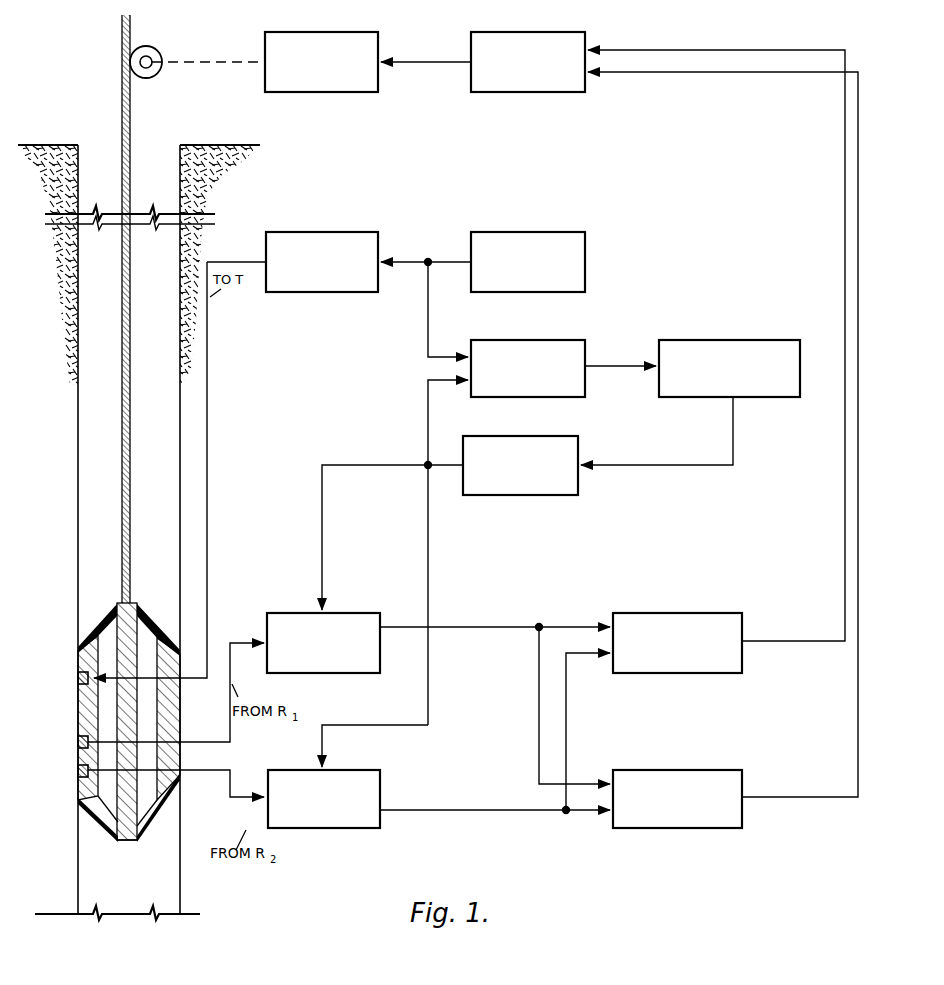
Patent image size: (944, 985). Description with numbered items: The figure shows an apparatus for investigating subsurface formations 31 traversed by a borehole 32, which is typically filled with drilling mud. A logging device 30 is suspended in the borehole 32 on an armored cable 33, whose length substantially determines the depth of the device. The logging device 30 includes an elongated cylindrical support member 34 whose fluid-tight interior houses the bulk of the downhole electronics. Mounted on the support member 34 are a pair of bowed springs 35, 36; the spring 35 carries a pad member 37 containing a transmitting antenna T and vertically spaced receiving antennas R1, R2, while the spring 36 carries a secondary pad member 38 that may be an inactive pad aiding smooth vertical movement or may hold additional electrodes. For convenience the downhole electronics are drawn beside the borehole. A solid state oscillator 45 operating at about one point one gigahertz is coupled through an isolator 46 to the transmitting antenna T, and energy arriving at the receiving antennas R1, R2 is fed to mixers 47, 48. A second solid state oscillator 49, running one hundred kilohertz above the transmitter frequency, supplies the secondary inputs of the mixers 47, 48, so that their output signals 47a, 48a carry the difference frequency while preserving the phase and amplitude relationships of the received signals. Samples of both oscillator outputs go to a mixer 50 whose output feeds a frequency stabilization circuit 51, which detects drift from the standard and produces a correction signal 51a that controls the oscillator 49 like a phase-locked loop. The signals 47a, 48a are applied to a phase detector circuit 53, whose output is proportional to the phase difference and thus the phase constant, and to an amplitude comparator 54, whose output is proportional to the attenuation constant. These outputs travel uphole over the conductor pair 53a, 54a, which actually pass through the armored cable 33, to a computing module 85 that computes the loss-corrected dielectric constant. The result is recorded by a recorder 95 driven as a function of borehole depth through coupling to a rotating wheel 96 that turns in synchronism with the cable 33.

The logging device 30 is at (113, 702).
The subsurface formations 31 is at (48, 143).
The borehole 32 is at (98, 138).
The armored cable 33 is at (130, 190).
The elongated cylindrical support member 34 is at (134, 838).
The bowed spring 35 is at (106, 622).
The bowed spring 36 is at (161, 624).
The pad member 37 is at (77, 656).
The secondary pad member 38 is at (173, 784).
The solid state oscillator 45 is at (501, 231).
The isolator 46 is at (297, 231).
The mixer 47 is at (296, 613).
The mixer output signal 47a is at (473, 627).
The mixer 48 is at (296, 769).
The mixer output signal 48a is at (476, 810).
The solid state oscillator 49 is at (495, 435).
The mixer 50 is at (501, 339).
The frequency stabilization circuit 51 is at (689, 339).
The correction signal 51a is at (734, 434).
The phase detector circuit 53 is at (643, 613).
The conductor 53a is at (812, 647).
The amplitude comparator 54 is at (645, 769).
The conductor 54a is at (824, 800).
The computing module 85 is at (495, 31).
The recorder 95 is at (289, 31).
The rotating wheel 96 is at (148, 45).
The transmitting antenna T is at (76, 679).
The receiving antenna R1 is at (78, 741).
The receiving antenna R2 is at (78, 770).